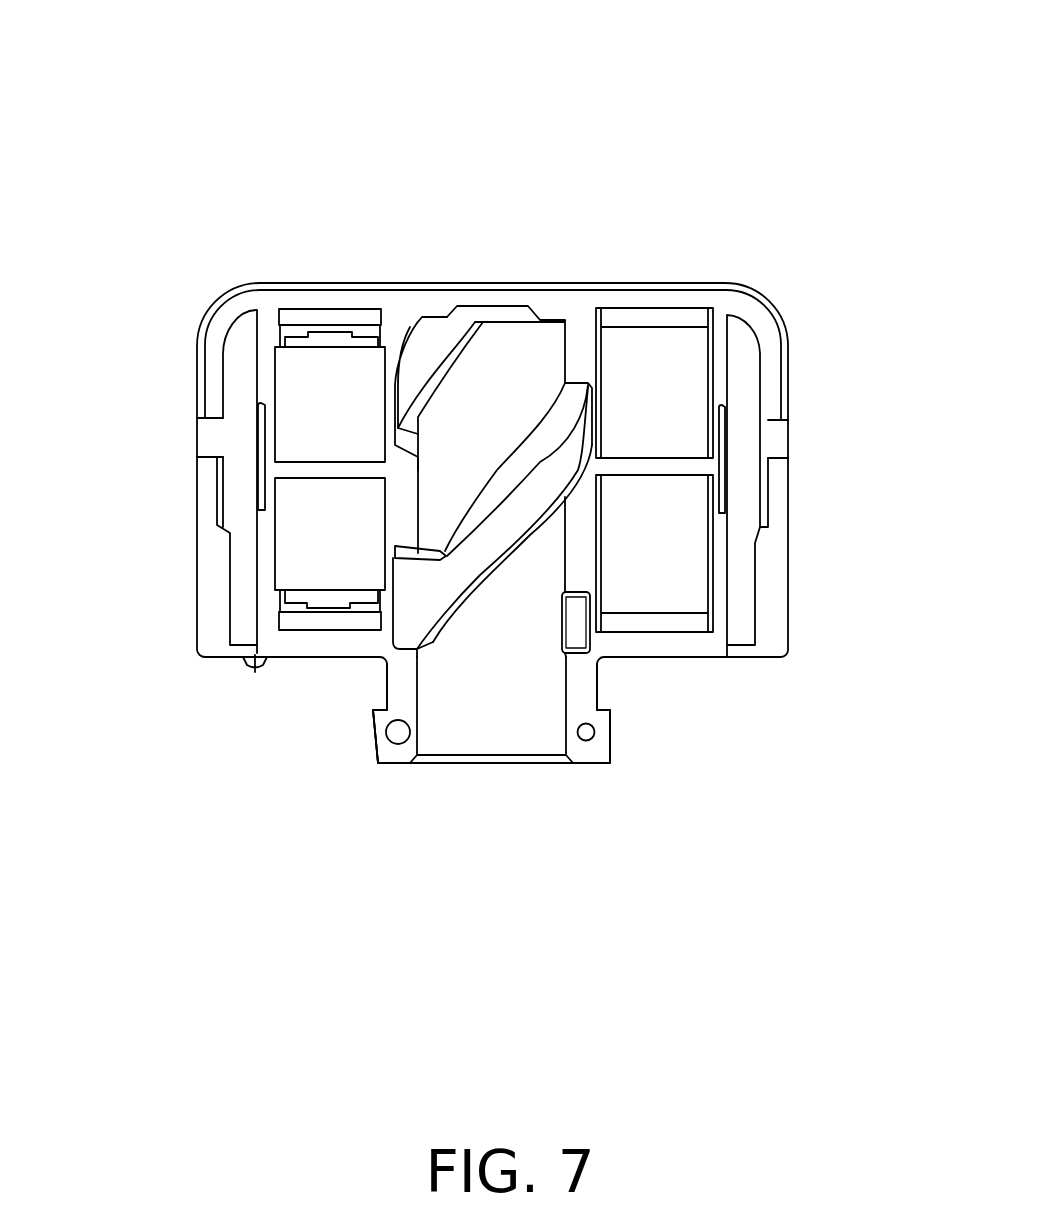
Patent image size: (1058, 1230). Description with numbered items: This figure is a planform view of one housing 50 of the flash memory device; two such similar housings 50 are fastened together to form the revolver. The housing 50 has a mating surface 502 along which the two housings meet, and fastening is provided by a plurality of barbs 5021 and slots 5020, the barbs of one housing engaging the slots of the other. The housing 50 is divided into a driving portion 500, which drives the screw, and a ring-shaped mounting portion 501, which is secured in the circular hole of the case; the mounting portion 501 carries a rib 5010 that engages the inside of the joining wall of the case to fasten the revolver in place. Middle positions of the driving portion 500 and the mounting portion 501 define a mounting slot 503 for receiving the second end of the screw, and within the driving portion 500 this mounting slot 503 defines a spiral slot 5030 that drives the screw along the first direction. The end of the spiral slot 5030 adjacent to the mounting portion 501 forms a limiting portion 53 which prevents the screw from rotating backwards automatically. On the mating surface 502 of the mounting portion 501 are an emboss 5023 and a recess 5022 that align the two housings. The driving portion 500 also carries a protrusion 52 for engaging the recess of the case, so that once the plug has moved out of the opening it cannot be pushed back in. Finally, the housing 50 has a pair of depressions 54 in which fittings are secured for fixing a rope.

The housing 50 is at (468, 62).
The driving portion 500 is at (757, 332).
The mounting portion 501 is at (585, 688).
The mating surface 502 is at (582, 342).
The mounting slot 503 is at (495, 718).
The rib 5010 is at (378, 714).
The slot 5020 is at (655, 327).
The barb 5021 is at (307, 618).
The recess 5022 is at (398, 736).
The emboss 5023 is at (594, 735).
The spiral slot 5030 is at (520, 515).
The protrusion 52 is at (255, 668).
The limiting portion 53 is at (415, 550).
The depression 54 is at (725, 470).